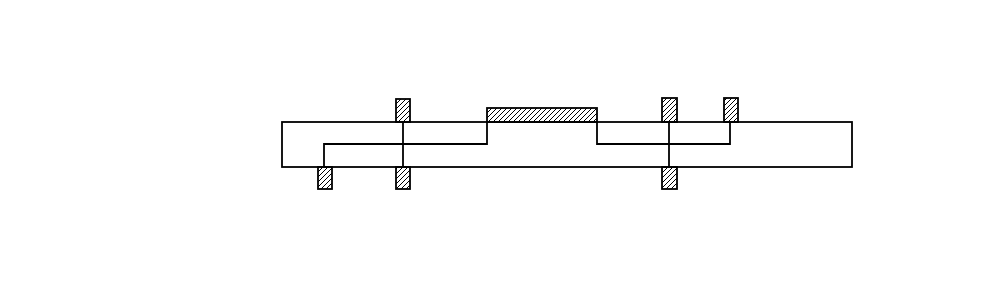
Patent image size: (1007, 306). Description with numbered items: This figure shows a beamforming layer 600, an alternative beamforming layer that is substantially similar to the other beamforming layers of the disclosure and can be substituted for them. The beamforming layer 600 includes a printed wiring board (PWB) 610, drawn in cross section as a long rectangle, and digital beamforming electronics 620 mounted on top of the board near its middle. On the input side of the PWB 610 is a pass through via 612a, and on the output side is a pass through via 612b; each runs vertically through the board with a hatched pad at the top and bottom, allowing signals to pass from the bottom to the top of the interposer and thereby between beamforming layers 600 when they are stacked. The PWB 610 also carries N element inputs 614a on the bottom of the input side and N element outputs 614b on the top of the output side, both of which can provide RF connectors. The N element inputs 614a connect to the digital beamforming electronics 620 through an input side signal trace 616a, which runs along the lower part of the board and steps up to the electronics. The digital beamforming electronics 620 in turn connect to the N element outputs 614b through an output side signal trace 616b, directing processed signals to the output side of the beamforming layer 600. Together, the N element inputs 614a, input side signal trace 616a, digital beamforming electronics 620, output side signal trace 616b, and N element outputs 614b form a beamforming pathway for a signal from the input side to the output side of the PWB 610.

The beamforming layer 600 is at (211, 118).
The printed wiring board (PWB) 610 is at (852, 144).
The pass through via 612a is at (396, 112).
The pass through via 612b is at (660, 110).
The N element inputs 614a is at (318, 179).
The N element outputs 614b is at (738, 110).
The input side signal trace 616a is at (468, 145).
The output side signal trace 616b is at (710, 145).
The digital beamforming electronics 620 is at (543, 108).